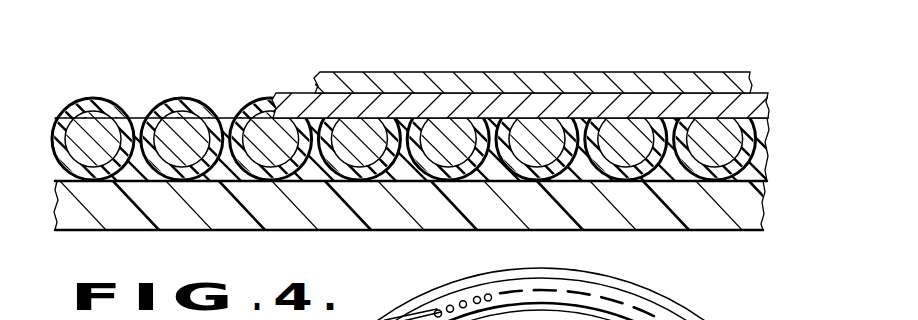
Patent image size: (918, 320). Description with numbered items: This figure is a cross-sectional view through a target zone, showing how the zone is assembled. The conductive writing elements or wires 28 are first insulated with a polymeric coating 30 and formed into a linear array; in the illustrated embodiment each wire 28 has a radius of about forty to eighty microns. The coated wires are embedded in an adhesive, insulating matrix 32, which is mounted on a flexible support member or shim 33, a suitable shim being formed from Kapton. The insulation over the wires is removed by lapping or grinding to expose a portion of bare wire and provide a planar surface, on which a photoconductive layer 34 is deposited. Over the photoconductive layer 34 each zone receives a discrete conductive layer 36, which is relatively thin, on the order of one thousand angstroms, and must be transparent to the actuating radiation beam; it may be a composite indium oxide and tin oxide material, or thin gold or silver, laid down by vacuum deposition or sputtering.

The conductive writing elements or wires 28 is at (252, 128).
The polymeric coating 30 is at (430, 170).
The adhesive, insulating matrix 32 is at (768, 167).
The flexible support member or shim 33 is at (768, 213).
The photoconductive layer 34 is at (768, 110).
The conductive layer 36 is at (553, 73).